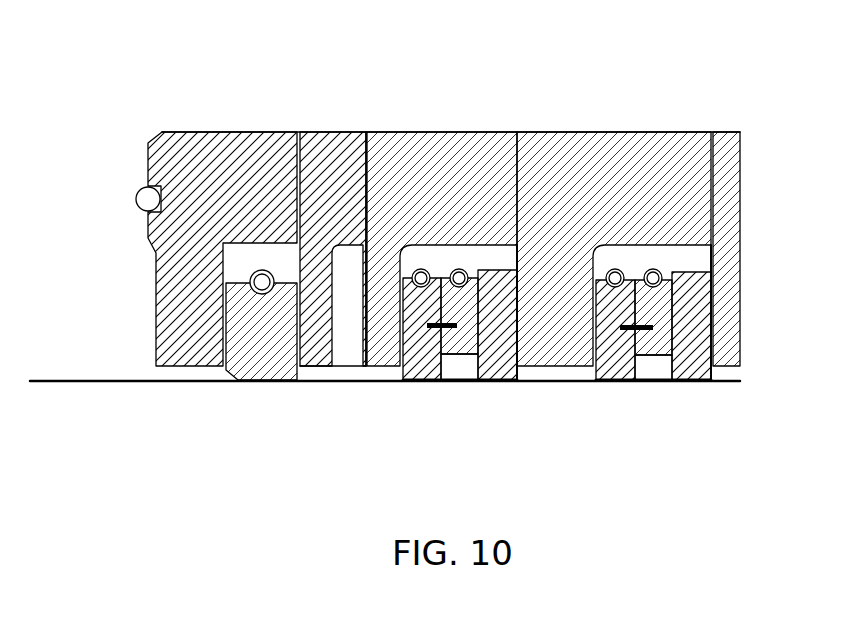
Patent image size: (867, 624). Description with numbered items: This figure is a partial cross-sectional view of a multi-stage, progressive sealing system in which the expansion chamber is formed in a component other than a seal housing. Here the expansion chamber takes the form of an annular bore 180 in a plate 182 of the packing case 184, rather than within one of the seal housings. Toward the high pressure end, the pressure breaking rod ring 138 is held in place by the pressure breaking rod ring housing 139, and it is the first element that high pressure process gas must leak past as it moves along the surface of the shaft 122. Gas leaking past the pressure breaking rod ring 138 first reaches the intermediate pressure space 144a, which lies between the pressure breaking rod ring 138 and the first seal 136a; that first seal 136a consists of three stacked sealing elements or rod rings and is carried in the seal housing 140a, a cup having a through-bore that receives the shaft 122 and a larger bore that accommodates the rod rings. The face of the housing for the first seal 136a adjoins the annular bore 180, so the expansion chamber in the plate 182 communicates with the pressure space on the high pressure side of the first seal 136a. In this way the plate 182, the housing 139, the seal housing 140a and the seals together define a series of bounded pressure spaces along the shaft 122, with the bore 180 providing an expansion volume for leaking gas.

The packing case 184 is at (132, 102).
The pressure breaking rod ring housing 139 is at (252, 172).
The pressure breaking rod ring 138 is at (268, 330).
The plate 182 is at (325, 165).
The annular bore 180 is at (343, 282).
The intermediate pressure space 144a is at (367, 381).
The seal housing 140a is at (468, 165).
The first seal 136a is at (503, 363).
The shaft 122 is at (138, 380).